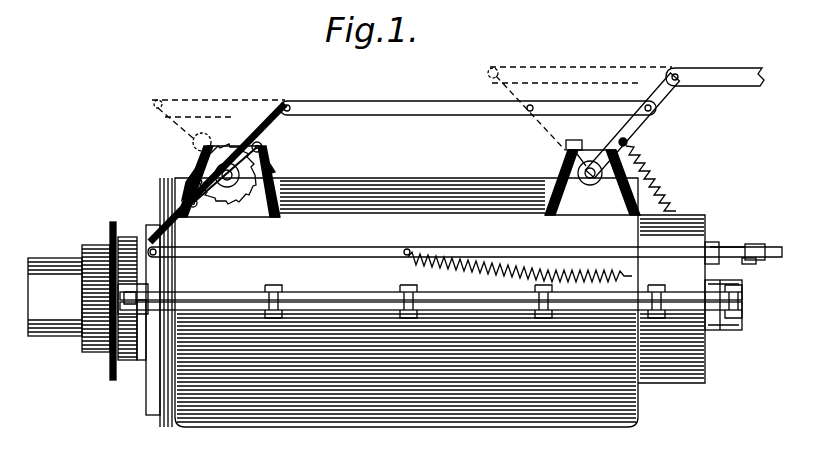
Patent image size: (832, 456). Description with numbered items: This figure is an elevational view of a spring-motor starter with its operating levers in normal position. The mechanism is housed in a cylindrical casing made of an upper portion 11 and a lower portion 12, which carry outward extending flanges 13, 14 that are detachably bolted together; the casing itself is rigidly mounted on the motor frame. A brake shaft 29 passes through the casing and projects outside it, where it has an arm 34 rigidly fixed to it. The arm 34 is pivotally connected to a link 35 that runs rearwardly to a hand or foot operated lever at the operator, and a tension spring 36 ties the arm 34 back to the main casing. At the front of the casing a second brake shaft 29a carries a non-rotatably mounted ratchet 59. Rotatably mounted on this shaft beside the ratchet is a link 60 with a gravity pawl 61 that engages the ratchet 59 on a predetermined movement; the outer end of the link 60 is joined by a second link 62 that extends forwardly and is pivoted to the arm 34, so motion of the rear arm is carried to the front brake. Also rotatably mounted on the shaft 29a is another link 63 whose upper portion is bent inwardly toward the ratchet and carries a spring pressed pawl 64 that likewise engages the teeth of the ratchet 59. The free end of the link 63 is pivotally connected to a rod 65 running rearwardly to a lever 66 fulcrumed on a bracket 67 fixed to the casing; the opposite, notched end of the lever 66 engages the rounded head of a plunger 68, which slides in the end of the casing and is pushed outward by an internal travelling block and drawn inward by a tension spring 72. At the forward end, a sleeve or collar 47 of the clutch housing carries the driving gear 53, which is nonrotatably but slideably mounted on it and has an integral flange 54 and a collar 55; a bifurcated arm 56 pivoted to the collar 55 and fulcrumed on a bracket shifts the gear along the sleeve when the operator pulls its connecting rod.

The upper portion of casing 11 is at (383, 180).
The lower portion of casing 12 is at (362, 426).
The flange 13 is at (320, 300).
The flange 14 is at (360, 306).
The brake shaft 29 is at (588, 178).
The front brake shaft 29a is at (240, 205).
The arm 34 is at (648, 126).
The link 35 is at (729, 87).
The tension spring 36 is at (668, 190).
The sleeve or collar 47 is at (55, 297).
The driving gear 53 is at (92, 352).
The flange 54 is at (112, 380).
The collar 55 is at (134, 360).
The bifurcated arm 56 is at (128, 362).
The ratchet 59 is at (272, 168).
The link 60 is at (256, 134).
The gravity pawl 61 is at (262, 150).
The second link 62 is at (456, 92).
The second link 63 is at (186, 222).
The spring pressed pawl 64 is at (183, 192).
The rod 65 is at (368, 250).
The lever 66 is at (726, 248).
The bracket 67 is at (748, 262).
The plunger 68 is at (766, 247).
The tension spring 72 is at (496, 266).